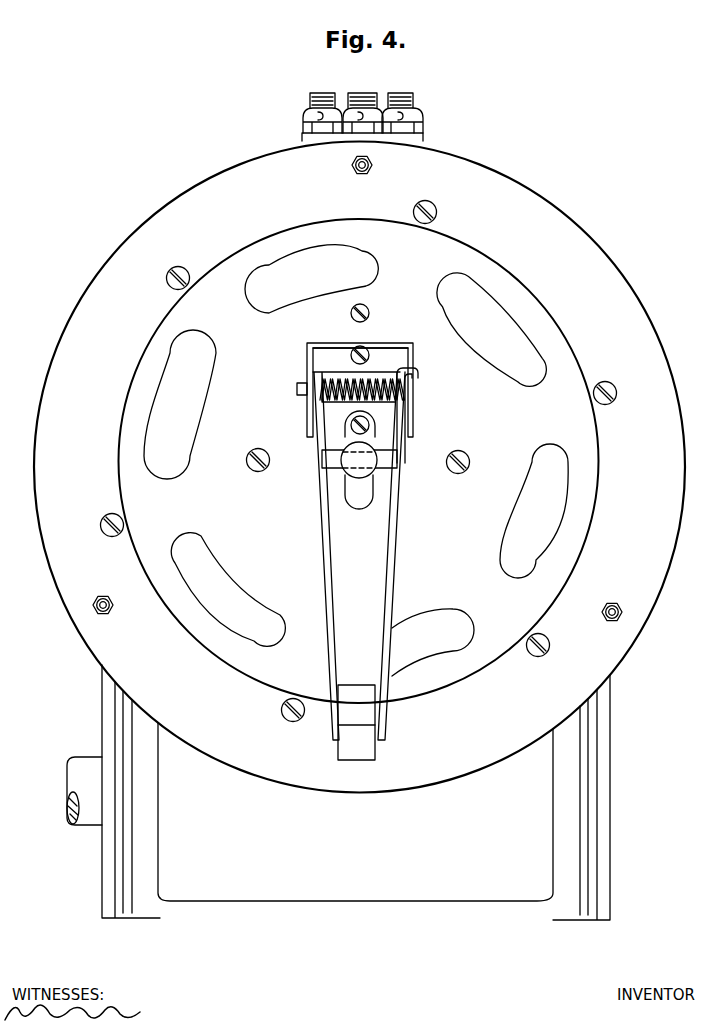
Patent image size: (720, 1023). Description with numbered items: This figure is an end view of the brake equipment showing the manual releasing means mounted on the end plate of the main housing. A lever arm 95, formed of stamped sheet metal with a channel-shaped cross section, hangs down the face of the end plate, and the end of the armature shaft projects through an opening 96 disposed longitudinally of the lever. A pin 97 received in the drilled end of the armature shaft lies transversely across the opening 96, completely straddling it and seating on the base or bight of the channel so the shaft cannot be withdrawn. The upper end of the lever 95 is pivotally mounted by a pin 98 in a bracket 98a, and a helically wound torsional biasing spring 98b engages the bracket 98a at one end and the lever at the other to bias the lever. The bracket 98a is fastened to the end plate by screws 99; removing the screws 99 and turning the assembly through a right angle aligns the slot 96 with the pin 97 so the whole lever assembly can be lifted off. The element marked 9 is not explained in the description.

The supporting plate 9 is at (363, 346).
The pointer arm 95 is at (400, 541).
The pivot bearing 96 is at (368, 497).
The cross bar 97 is at (398, 461).
The spring 98 is at (412, 390).
The bracket 98a is at (413, 354).
The pin 98b is at (322, 372).
The adjusting screw 99 is at (382, 430).